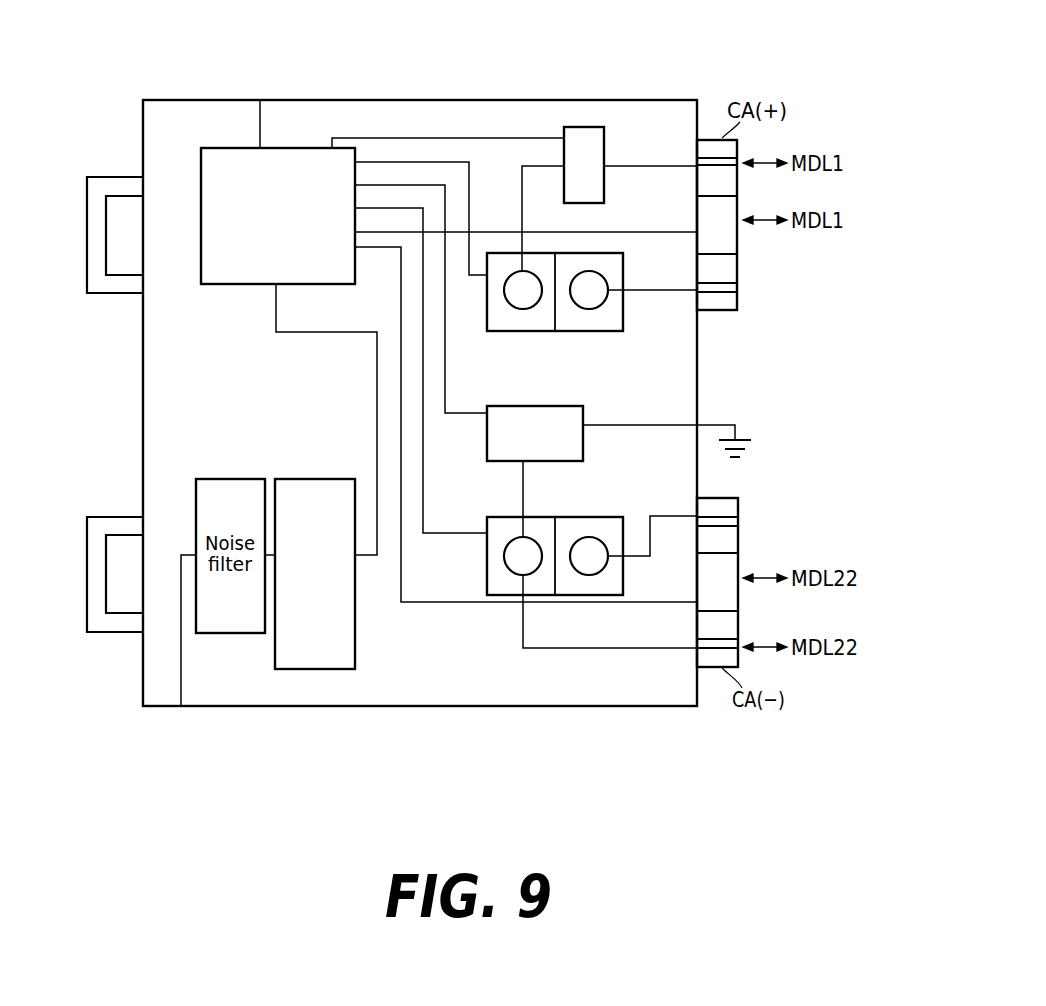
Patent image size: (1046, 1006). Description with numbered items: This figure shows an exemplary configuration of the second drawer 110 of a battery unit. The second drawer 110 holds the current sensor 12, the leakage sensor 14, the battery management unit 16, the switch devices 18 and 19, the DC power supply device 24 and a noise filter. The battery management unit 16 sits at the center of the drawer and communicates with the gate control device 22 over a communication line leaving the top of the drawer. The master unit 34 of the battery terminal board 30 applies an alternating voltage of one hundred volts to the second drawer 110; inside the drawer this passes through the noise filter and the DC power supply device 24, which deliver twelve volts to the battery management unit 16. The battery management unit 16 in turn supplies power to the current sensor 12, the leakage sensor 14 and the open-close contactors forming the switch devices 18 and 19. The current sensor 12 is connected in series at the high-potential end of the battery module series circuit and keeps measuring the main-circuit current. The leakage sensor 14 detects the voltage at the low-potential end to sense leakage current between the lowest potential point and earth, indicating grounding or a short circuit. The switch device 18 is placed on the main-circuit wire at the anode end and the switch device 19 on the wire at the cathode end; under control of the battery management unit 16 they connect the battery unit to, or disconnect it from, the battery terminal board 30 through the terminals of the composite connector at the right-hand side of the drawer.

The second drawer 110 is at (508, 706).
The gate control device 22 is at (260, 80).
The battery management unit 16 is at (222, 286).
The current sensor 12 is at (604, 143).
The switch device 18 is at (623, 258).
The leakage sensor 14 is at (558, 406).
The switch device 19 is at (604, 517).
The DC power supply device 24 is at (315, 479).
The master unit 34 is at (181, 726).
The battery terminal board 30 is at (750, 289).